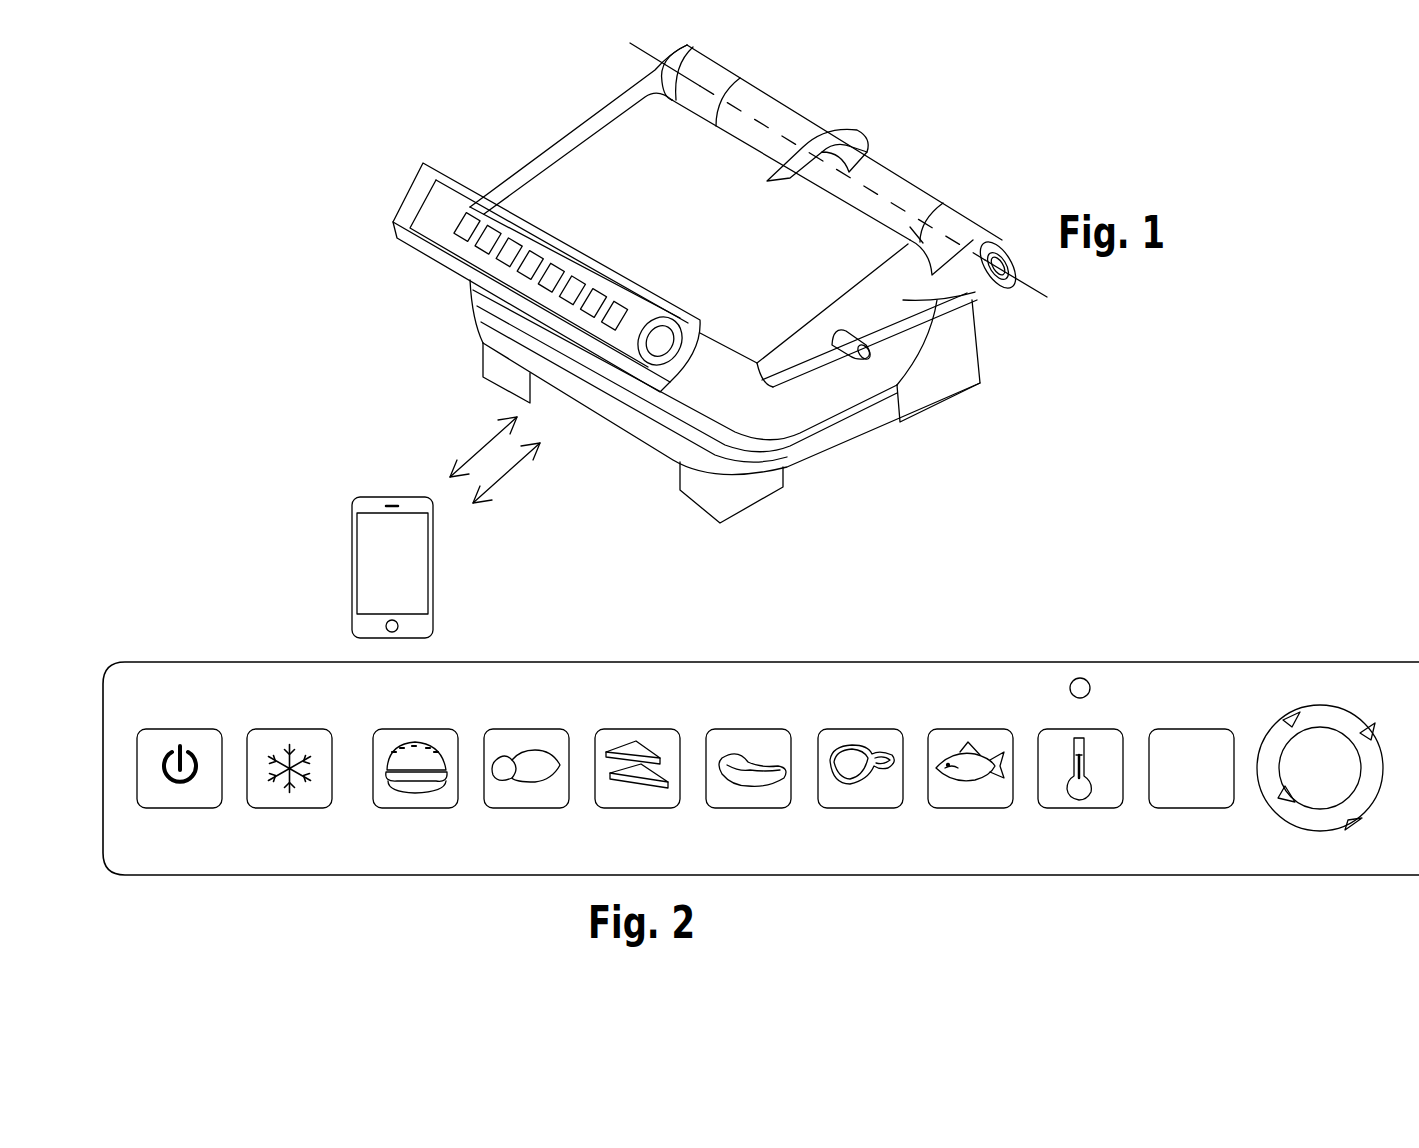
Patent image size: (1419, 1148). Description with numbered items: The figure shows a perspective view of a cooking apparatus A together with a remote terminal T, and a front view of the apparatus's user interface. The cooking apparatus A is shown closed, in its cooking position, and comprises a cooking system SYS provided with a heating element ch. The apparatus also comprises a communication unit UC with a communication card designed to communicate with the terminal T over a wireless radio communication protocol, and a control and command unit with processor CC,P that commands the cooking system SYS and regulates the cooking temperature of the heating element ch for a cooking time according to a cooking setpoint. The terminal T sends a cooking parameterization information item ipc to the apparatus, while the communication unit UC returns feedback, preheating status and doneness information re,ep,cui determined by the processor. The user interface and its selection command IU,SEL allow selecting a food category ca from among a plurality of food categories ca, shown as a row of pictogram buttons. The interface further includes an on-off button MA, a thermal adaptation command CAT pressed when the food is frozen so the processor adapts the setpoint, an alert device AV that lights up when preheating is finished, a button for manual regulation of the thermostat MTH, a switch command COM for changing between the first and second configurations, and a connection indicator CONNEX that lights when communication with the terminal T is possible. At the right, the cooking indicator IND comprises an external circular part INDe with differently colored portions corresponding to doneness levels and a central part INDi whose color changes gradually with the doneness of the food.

In FIG. 1, the cooking apparatus A is at (969, 177).
In FIG. 1, the cooking system SYS is at (623, 164).
In FIG. 1, the communication unit UC is at (408, 193).
In FIG. 1, the control and command unit and processor CC,P is at (462, 203).
In FIG. 2, the control and command unit and processor CC,P is at (460, 877).
In FIG. 1, the heating element ch is at (813, 425).
In FIG. 1, the cooking parameterization information item ipc is at (478, 447).
In FIG. 1, the feedback information item, preheating status information and doneness informatio re,ep,cui is at (546, 473).
In FIG. 1, the terminal T is at (352, 569).
In FIG. 2, the on-off button MA is at (178, 808).
In FIG. 2, the thermal adaptation command CAT is at (280, 808).
In FIG. 2, the food category ca is at (513, 732).
In FIG. 2, the user interface and selection command IU,SEL is at (753, 703).
In FIG. 2, the alert device AV is at (1078, 676).
In FIG. 2, the button for manual regulation of the thermostat MTH is at (1080, 808).
In FIG. 2, the switch command COM is at (1193, 728).
In FIG. 2, the connection indicator CONNEX is at (1187, 795).
In FIG. 2, the cooking indicator IND is at (1300, 830).
In FIG. 2, the central part of the cooking indicator INDi is at (1320, 752).
In FIG. 2, the external circular part of the cooking indicator INDe is at (1367, 790).